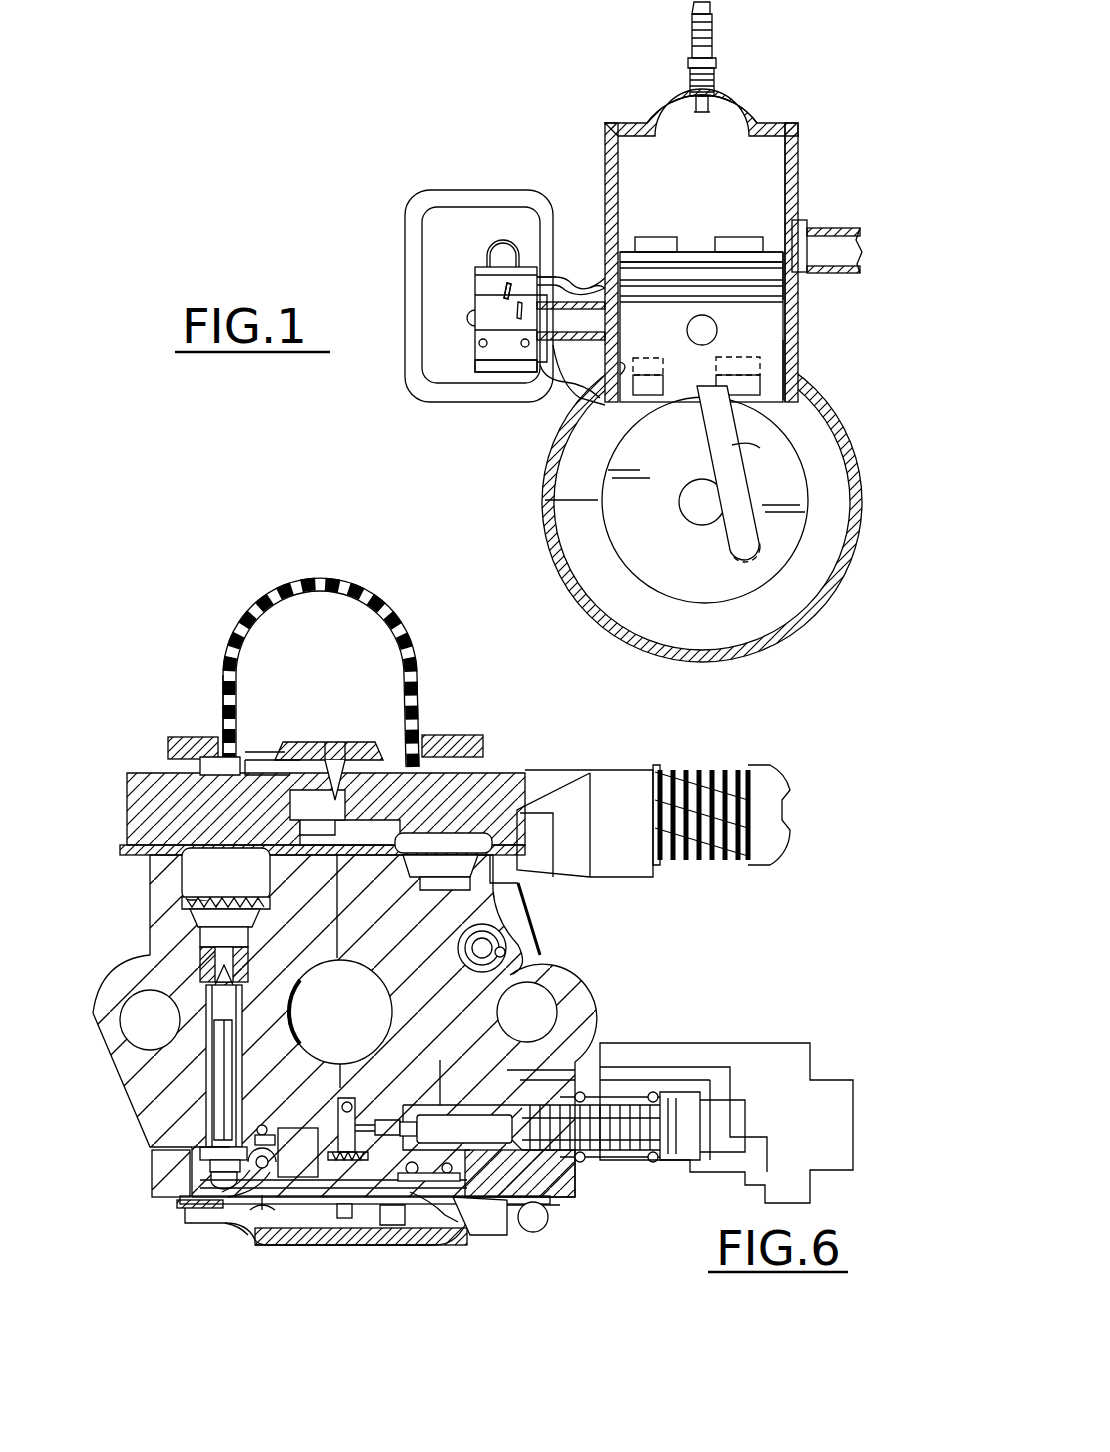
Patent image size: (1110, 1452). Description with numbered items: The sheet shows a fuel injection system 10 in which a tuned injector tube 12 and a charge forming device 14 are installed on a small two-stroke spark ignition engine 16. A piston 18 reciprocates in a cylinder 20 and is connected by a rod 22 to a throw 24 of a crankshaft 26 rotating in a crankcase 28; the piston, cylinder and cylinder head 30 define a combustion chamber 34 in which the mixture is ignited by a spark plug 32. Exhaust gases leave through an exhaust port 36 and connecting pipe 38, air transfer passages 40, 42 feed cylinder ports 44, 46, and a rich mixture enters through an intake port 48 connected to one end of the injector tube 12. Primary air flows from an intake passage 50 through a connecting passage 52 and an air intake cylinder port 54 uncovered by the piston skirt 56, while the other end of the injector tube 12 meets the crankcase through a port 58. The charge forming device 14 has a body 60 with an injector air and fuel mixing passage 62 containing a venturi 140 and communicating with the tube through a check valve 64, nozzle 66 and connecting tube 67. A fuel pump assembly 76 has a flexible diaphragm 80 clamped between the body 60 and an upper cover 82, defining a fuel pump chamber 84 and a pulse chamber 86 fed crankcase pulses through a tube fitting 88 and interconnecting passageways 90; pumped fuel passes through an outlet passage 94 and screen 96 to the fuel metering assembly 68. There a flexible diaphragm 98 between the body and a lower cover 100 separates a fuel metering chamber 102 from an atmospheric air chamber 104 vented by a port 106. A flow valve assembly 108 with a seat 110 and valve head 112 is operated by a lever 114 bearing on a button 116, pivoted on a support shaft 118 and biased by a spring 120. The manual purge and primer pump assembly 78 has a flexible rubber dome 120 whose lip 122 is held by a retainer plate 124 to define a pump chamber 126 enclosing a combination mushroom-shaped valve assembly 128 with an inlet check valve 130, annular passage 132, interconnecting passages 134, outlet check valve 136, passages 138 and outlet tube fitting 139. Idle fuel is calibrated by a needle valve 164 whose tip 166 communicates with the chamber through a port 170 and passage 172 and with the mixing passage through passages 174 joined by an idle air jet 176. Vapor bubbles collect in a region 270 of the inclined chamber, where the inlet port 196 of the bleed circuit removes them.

In FIG. 1, the fuel injection system 10 is at (385, 180).
In FIG. 1, the tuned injector tube 12 is at (405, 216).
In FIG. 1, the charge forming device 14 is at (470, 290).
In FIG. 1, the two-stroke spark ignition internal combustion engine 16 is at (800, 118).
In FIG. 1, the piston 18 is at (760, 320).
In FIG. 1, the cylinder 20 is at (800, 162).
In FIG. 1, the rod 22 is at (744, 462).
In FIG. 1, the throw 24 is at (728, 557).
In FIG. 1, the crankshaft 26 is at (545, 498).
In FIG. 1, the crankcase 28 is at (560, 545).
In FIG. 1, the cylinder head 30 is at (732, 100).
In FIG. 1, the spark plug 32 is at (688, 38).
In FIG. 1, the combustion chamber 34 is at (676, 126).
In FIG. 1, the exhaust port 36 is at (782, 245).
In FIG. 1, the connecting pipe 38 is at (825, 245).
In FIG. 1, the air transfer passage 40 is at (780, 402).
In FIG. 1, the air transfer passage 42 is at (640, 398).
In FIG. 1, the cylinder port 44 is at (730, 237).
In FIG. 1, the cylinder port 46 is at (655, 237).
In FIG. 1, the intake port 48 is at (630, 250).
In FIG. 6, the intake passage 50 is at (385, 988).
In FIG. 1, the connecting passage 52 is at (600, 318).
In FIG. 1, the air intake cylinder port 54 is at (612, 340).
In FIG. 1, the piston skirt 56 is at (700, 400).
In FIG. 1, the port 58 is at (560, 400).
In FIG. 1, the body 60 is at (476, 344).
In FIG. 6, the body 60 is at (148, 910).
In FIG. 6, the injector air and fuel mixing passage 62 is at (505, 950).
In FIG. 1, the check valve 64 is at (560, 278).
In FIG. 1, the nozzle 66 is at (575, 283).
In FIG. 1, the connecting tube 67 is at (548, 276).
In FIG. 6, the fuel metering assembly 68 is at (177, 1207).
In FIG. 6, the fuel pump assembly 76 is at (520, 866).
In FIG. 1, the manual purge and primer pump assembly 78 is at (483, 240).
In FIG. 6, the manual purge and primer pump assembly 78 is at (222, 638).
In FIG. 6, the flexible diaphragm 80 is at (506, 860).
In FIG. 6, the upper cover 82 is at (126, 790).
In FIG. 6, the fuel pump chamber 84 is at (480, 835).
In FIG. 6, the pulse chamber 86 is at (450, 880).
In FIG. 1, the tube fitting 88 is at (495, 310).
In FIG. 6, the interconnecting passageways 90 is at (410, 880).
In FIG. 6, the outlet passage 94 is at (180, 875).
In FIG. 6, the screen 96 is at (226, 900).
In FIG. 6, the flexible diaphragm 98 is at (470, 1235).
In FIG. 6, the lower cover 100 is at (550, 1222).
In FIG. 6, the fuel metering chamber 102 is at (190, 1177).
In FIG. 6, the atmospheric air chamber 104 is at (260, 1222).
In FIG. 6, the port 106 is at (400, 1247).
In FIG. 6, the flow valve assembly 108 is at (205, 985).
In FIG. 6, the seat 110 is at (200, 965).
In FIG. 6, the valve head 112 is at (210, 1066).
In FIG. 6, the lever 114 is at (272, 1245).
In FIG. 6, the button 116 is at (340, 1230).
In FIG. 6, the support shaft 118 is at (225, 1210).
In FIG. 1, the flexible rubber dome 120 is at (510, 250).
In FIG. 6, the flexible rubber dome 120 is at (415, 640).
In FIG. 6, the lip 122 is at (170, 760).
In FIG. 6, the retainer plate 124 is at (190, 737).
In FIG. 6, the pump chamber 126 is at (335, 612).
In FIG. 6, the combination mushroom-shaped valve assembly 128 is at (345, 738).
In FIG. 6, the inlet check valve 130 is at (255, 758).
In FIG. 6, the annular passage 132 is at (250, 750).
In FIG. 6, the interconnecting passages 134 is at (466, 1189).
In FIG. 6, the outlet check valve 136 is at (290, 808).
In FIG. 6, the passages 138 is at (359, 819).
In FIG. 1, the outlet tube fitting 139 is at (500, 290).
In FIG. 6, the venturi 140 is at (500, 925).
In FIG. 6, the needle valve 164 is at (648, 1150).
In FIG. 6, the tip 166 is at (440, 1070).
In FIG. 6, the port 170 is at (440, 1245).
In FIG. 6, the passage 172 is at (380, 1120).
In FIG. 6, the passages 174 is at (450, 1120).
In FIG. 6, the idle air jet 176 is at (388, 1245).
In FIG. 6, the inlet port 196 is at (255, 1135).
In FIG. 6, the vapor bubble collection region 270 is at (190, 1155).